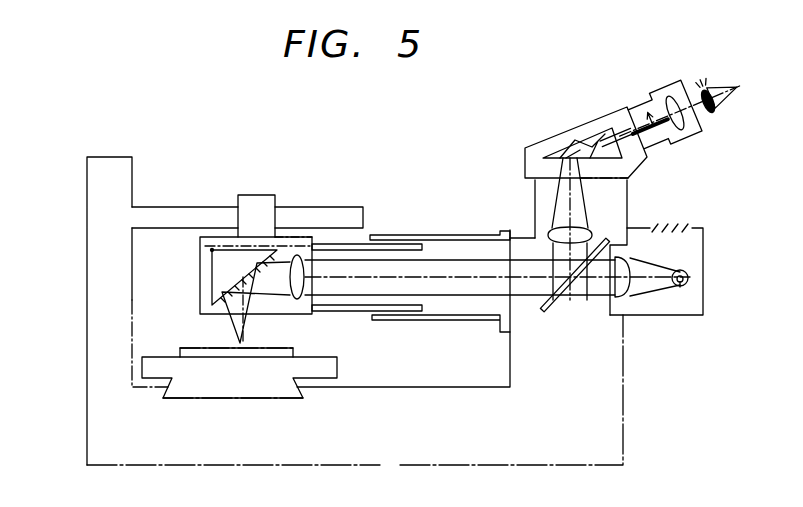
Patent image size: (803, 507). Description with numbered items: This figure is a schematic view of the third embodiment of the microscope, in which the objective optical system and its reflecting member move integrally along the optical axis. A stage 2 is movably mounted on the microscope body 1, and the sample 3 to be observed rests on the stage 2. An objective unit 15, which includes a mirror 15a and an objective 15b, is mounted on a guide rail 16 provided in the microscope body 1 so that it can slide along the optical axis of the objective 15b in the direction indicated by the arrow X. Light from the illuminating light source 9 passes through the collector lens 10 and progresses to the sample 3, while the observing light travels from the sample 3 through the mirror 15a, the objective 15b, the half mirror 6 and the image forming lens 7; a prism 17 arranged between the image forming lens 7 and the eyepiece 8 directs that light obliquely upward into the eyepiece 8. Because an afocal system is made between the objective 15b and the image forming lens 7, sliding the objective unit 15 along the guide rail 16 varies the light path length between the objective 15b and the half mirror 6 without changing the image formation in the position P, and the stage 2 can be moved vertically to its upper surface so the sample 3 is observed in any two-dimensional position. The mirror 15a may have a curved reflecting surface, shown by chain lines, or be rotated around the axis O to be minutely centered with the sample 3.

The microscope body 1 is at (87, 395).
The stage 2 is at (337, 365).
The sample 3 is at (192, 352).
The half mirror 6 is at (555, 304).
The image forming lens 7 is at (598, 236).
The eyepiece 8 is at (672, 92).
The illuminating light source 9 is at (689, 282).
The collector lens 10 is at (622, 298).
The objective unit 15 is at (303, 240).
The mirror 15a is at (223, 250).
The objective 15b is at (298, 298).
The guide rail 16 is at (152, 207).
The prism 17 is at (600, 135).
The axis O is at (212, 250).
The image formation position P is at (634, 125).
The arrow indicating direction of movement X is at (274, 182).